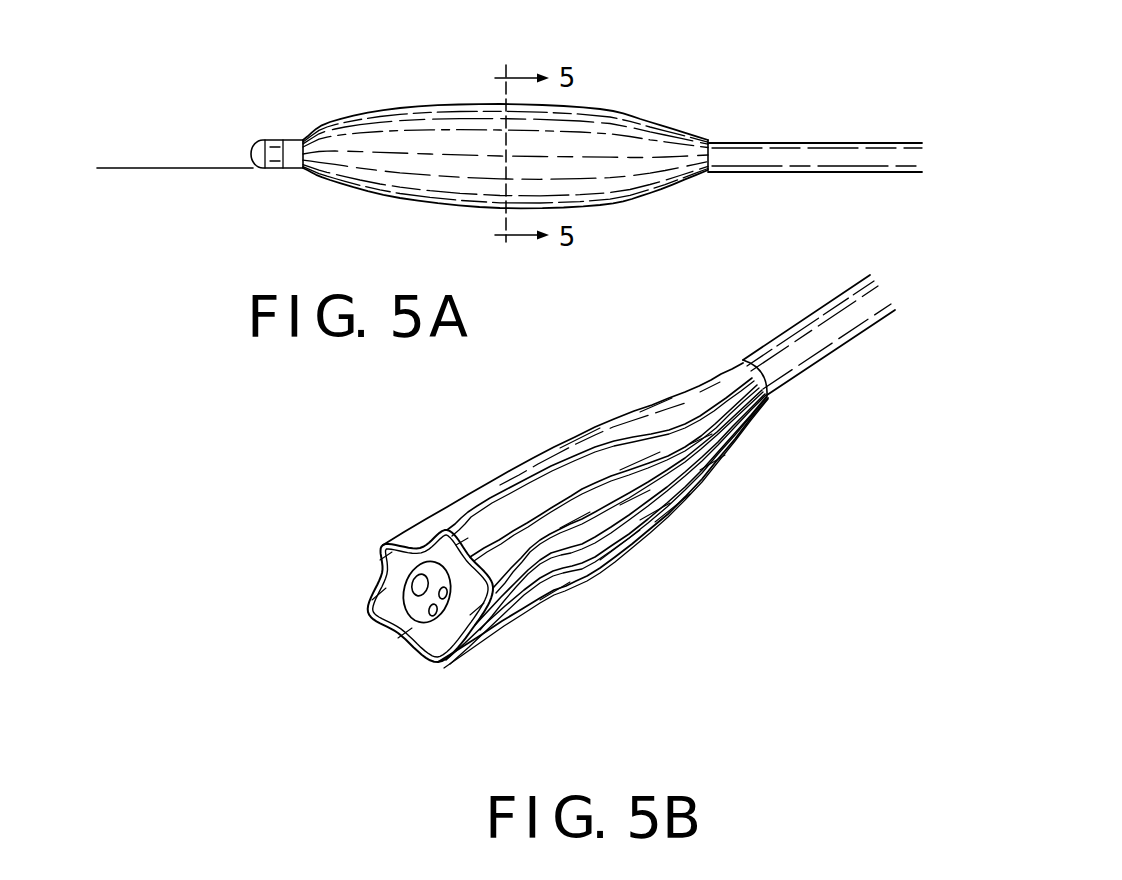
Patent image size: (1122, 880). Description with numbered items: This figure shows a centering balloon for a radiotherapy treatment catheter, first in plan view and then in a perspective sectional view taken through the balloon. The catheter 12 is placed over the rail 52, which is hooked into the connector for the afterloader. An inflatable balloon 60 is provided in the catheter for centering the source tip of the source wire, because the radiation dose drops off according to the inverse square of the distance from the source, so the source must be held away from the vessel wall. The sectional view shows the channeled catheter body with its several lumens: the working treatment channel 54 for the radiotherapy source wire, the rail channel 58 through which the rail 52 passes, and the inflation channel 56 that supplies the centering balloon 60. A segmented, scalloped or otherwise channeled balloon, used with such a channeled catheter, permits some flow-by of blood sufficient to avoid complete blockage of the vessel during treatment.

In FIG. 5A, the catheter 12 is at (782, 141).
In FIG. 5B, the catheter 12 is at (813, 363).
In FIG. 5A, the rail 52 is at (172, 168).
In FIG. 5B, the working treatment channel 54 is at (419, 578).
In FIG. 5B, the inflation channel 56 is at (447, 593).
In FIG. 5B, the rail channel 58 is at (436, 615).
In FIG. 5A, the inflatable balloon 60 is at (601, 108).